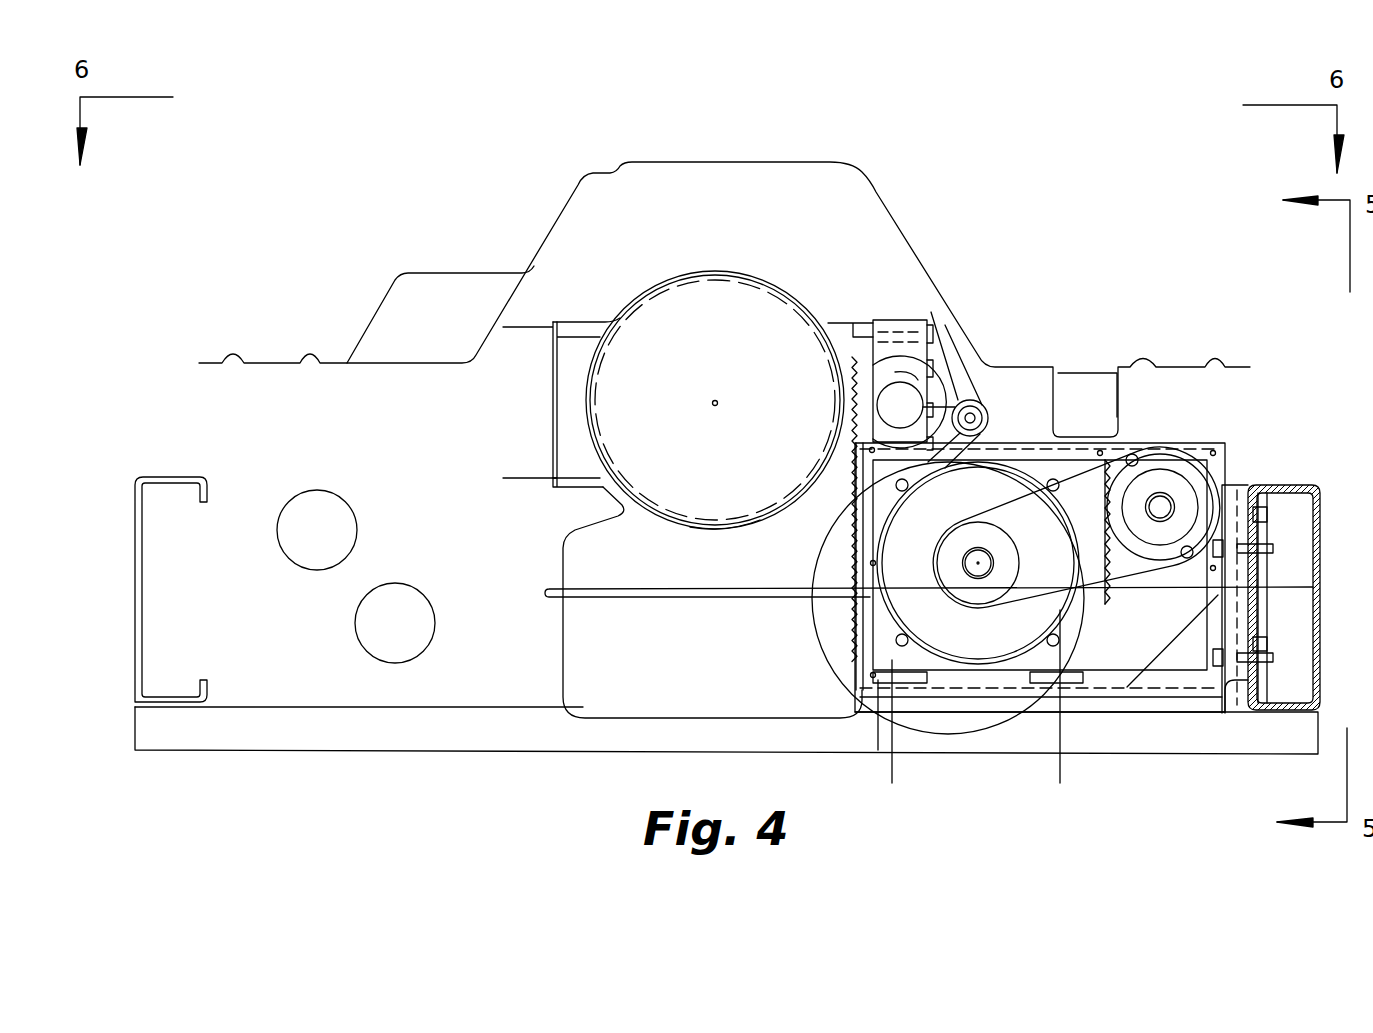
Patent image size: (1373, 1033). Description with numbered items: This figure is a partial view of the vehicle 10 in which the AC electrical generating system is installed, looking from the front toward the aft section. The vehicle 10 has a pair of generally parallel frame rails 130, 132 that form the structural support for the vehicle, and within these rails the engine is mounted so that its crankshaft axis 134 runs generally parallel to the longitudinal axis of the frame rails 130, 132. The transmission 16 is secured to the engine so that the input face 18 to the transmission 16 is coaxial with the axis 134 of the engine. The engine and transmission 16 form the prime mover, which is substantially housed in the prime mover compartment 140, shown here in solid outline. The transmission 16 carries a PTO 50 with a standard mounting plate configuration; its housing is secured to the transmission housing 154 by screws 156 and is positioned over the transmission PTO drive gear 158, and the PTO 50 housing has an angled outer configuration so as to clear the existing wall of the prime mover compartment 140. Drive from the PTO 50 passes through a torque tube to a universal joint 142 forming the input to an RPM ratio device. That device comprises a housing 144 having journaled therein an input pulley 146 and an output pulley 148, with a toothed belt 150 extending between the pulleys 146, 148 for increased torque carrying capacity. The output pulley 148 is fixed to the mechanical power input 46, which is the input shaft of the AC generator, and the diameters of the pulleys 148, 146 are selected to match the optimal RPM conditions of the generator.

The vehicle 10 is at (420, 213).
The transmission 16 is at (580, 523).
The input face 18 is at (640, 335).
The mechanical power input 46 is at (962, 565).
The PTO unit 50 is at (953, 360).
The frame rail 130 is at (132, 590).
The frame rail 132 is at (1322, 597).
The crankshaft axis 134 is at (716, 401).
The prime mover compartment 140 is at (750, 163).
The universal joint 142 is at (1180, 473).
The housing 144 is at (1178, 682).
The input pulley 146 is at (1230, 473).
The output pulley 148 is at (950, 597).
The belt 150 is at (1132, 572).
The transmission housing 154 is at (828, 323).
The screws 156 is at (923, 347).
The transmission PTO drive gear 158 is at (735, 535).